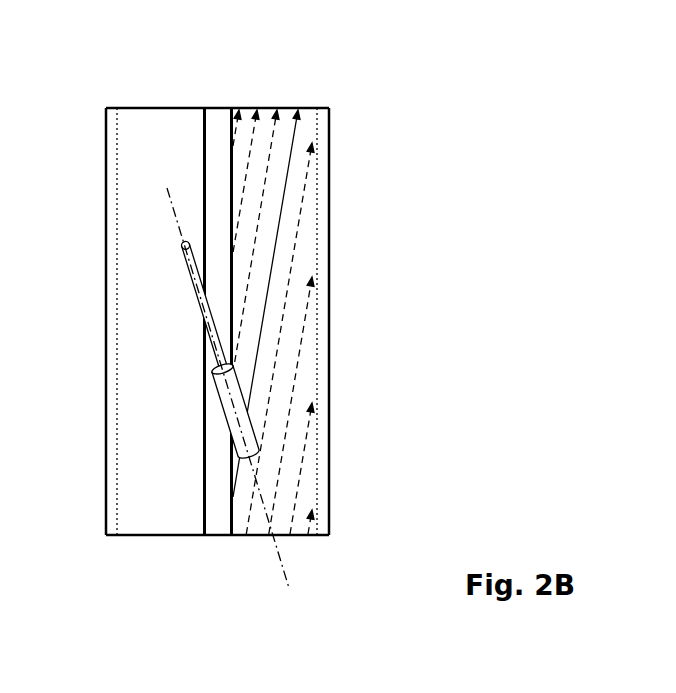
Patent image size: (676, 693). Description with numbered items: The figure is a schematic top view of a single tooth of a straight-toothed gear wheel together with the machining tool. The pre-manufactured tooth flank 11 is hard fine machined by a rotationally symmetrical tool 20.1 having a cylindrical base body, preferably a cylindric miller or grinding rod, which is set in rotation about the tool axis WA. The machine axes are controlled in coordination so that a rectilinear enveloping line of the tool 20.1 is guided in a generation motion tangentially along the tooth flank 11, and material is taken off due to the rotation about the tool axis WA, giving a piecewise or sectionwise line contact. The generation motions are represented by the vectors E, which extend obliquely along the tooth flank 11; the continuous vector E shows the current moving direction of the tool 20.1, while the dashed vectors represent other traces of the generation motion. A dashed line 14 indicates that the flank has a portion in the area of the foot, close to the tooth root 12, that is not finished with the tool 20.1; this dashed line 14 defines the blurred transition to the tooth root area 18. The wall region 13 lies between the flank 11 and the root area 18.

The tooth flank 11 is at (263, 107).
The tooth root 12 is at (338, 363).
The wall / partition 13 is at (207, 541).
The dashed line 14 is at (117, 195).
The tooth root area 18 is at (322, 477).
The rotationally symmetrical tool 20.1 is at (227, 420).
The vectors of generation motion E is at (297, 132).
The tool axis WA is at (240, 402).